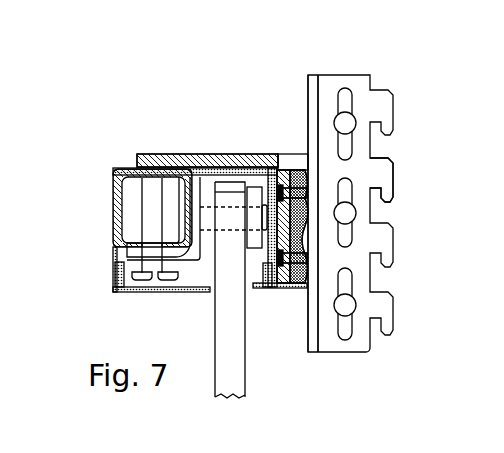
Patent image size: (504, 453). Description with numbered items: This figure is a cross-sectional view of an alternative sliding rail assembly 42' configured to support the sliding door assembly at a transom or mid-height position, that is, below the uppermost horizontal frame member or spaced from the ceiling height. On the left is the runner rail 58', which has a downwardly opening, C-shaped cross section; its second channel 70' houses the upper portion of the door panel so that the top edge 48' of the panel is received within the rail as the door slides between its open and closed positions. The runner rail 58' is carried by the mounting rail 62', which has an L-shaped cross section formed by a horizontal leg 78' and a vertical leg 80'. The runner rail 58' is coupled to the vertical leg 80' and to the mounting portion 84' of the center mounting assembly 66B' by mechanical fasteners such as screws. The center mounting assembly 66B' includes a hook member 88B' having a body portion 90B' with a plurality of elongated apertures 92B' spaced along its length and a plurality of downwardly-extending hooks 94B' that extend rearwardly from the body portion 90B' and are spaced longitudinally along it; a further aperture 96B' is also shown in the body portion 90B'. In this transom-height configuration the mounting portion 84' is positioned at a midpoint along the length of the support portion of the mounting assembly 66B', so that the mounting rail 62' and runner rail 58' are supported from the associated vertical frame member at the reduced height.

The sliding rail assembly 42' is at (177, 188).
The second channel 70' is at (153, 180).
The runner rail 58' is at (178, 187).
The horizontal leg 78' is at (202, 192).
The top edge 48' is at (233, 256).
The mounting rail 62' is at (287, 186).
The vertical leg 80' is at (292, 190).
The mounting portion 84' is at (350, 192).
The center mounting assembly 66B' is at (470, 98).
The hook 94B' is at (429, 180).
The aperture 96B' is at (393, 214).
The hook member 88B' is at (290, 223).
The body portion 90B' is at (301, 255).
The elongated aperture 92B' is at (358, 265).